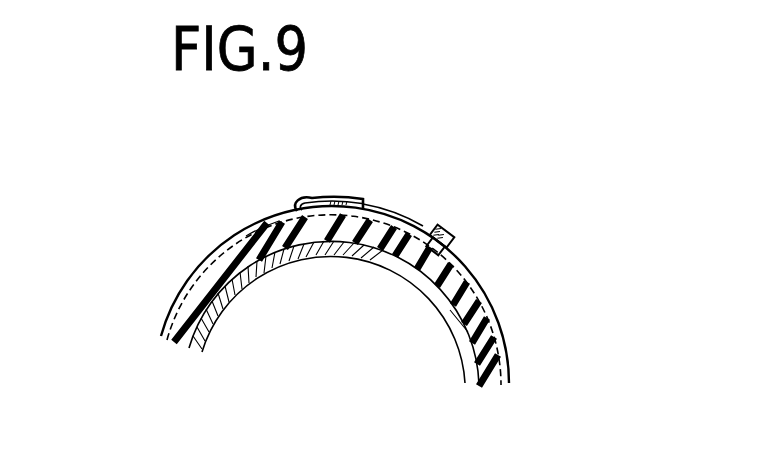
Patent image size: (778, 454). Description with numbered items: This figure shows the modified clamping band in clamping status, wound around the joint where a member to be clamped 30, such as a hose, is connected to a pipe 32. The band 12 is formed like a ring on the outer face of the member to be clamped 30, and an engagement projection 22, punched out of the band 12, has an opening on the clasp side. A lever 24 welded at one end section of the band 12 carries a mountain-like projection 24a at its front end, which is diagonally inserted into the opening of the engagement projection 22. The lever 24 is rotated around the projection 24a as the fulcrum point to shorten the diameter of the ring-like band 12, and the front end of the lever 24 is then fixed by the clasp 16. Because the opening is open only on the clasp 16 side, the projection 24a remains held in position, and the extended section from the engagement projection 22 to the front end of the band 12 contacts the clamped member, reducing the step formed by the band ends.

The band 12 is at (486, 297).
The clasp 16 is at (442, 232).
The engagement projection 22 is at (299, 201).
The lever 24 is at (400, 212).
The projection 24a is at (298, 222).
The member to be clamped 30 is at (500, 344).
The pipe 32 is at (467, 352).